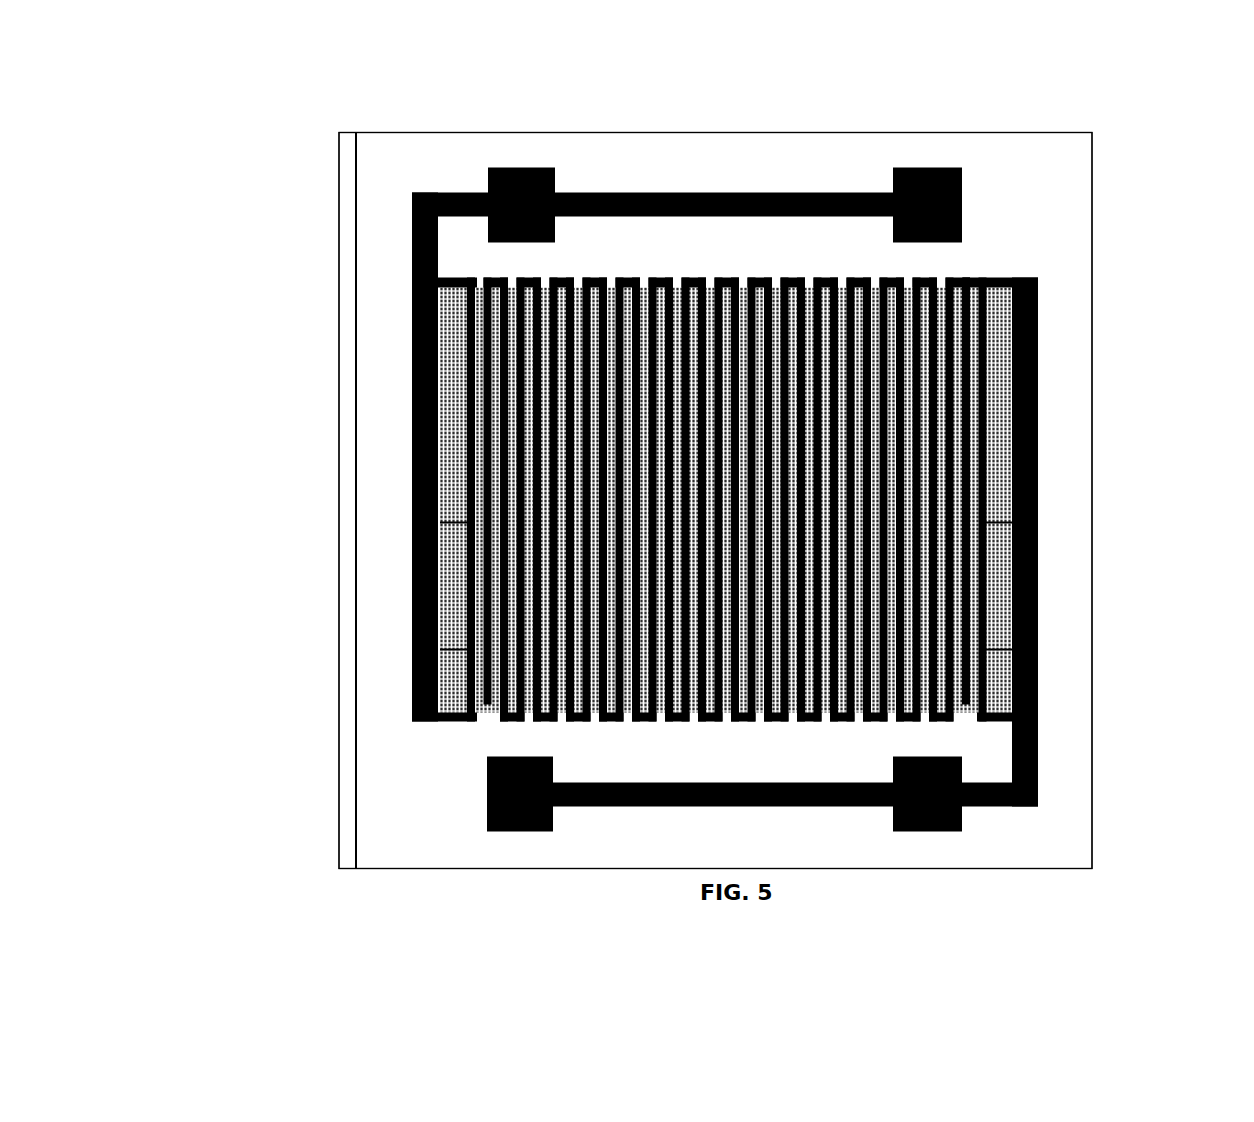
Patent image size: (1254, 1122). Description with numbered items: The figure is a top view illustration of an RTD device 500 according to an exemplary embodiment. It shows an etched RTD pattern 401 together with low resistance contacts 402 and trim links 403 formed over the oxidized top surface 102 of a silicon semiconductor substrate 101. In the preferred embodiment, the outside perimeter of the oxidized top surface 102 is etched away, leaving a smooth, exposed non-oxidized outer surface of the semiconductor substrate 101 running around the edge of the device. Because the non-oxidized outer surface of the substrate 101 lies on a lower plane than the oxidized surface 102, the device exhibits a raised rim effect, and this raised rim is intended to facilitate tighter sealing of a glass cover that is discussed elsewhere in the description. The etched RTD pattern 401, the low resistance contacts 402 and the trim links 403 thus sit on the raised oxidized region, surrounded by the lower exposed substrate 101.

The sensor device 500 is at (305, 163).
The non-oxidized semiconductor substrate 101 is at (1022, 850).
The oxidized top surface 102 is at (460, 410).
The etched RTD pattern 401 is at (497, 710).
The low resistance contacts 402 is at (930, 208).
The trim links 403 is at (1023, 375).